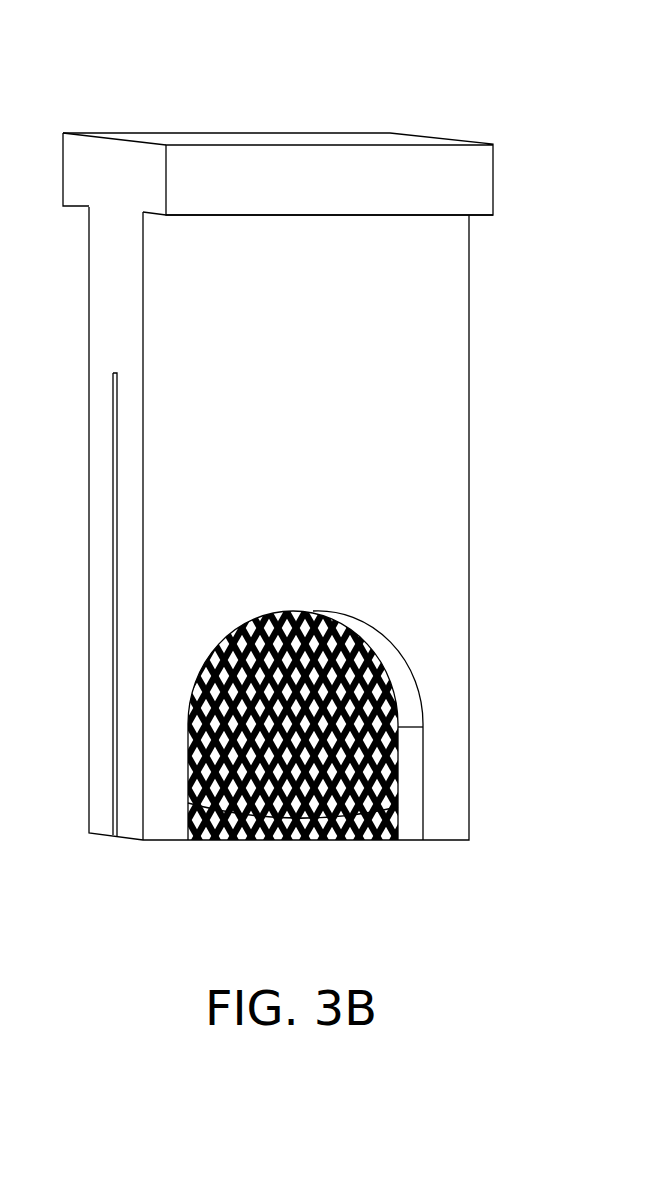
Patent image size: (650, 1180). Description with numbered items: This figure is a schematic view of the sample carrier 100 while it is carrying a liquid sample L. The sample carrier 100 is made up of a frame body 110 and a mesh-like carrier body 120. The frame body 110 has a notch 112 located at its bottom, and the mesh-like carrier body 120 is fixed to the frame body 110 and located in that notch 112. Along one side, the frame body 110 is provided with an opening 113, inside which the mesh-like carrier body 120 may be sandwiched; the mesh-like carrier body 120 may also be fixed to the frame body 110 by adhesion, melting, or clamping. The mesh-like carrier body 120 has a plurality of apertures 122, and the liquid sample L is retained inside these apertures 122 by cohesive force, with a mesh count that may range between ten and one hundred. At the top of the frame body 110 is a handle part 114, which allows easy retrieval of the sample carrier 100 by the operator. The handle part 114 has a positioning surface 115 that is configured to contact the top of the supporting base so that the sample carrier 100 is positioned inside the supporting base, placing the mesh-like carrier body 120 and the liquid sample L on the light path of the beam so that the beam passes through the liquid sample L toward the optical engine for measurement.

The sample carrier 100 is at (520, 72).
The frame body 110 is at (459, 499).
The notch 112 is at (410, 820).
The opening 113 is at (113, 786).
The handle part 114 is at (482, 178).
The positioning surface 115 is at (381, 215).
The mesh-like carrier body 120 is at (293, 760).
The apertures 122 is at (297, 836).
The liquid sample L is at (235, 836).